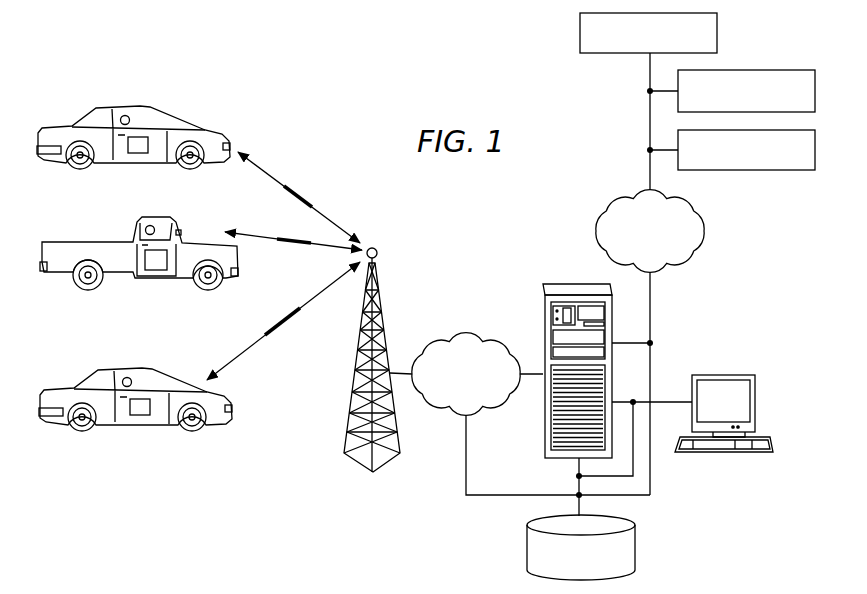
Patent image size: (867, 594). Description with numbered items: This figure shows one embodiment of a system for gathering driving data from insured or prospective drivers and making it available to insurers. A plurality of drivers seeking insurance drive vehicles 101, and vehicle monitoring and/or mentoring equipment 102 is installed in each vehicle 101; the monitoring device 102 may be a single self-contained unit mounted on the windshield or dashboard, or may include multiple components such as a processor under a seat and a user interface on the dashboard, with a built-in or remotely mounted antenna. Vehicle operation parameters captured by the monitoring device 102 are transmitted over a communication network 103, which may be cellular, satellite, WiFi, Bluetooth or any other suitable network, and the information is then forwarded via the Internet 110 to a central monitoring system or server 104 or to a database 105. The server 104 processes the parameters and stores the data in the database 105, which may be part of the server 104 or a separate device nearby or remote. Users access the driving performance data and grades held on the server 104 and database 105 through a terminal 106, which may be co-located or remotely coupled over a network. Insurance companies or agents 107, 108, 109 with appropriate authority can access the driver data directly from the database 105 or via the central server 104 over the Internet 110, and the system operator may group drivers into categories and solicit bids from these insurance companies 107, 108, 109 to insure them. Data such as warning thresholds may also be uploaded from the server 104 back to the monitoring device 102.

The vehicle 101 is at (150, 117).
The vehicle monitoring device 102 is at (138, 154).
The communication network 103 is at (356, 352).
The central server 104 is at (572, 285).
The database 105 is at (637, 545).
The terminal 106 is at (720, 454).
The insurance company 107 is at (580, 33).
The insurance company 108 is at (757, 70).
The insurance company 109 is at (758, 171).
The Internet 110 is at (459, 332).